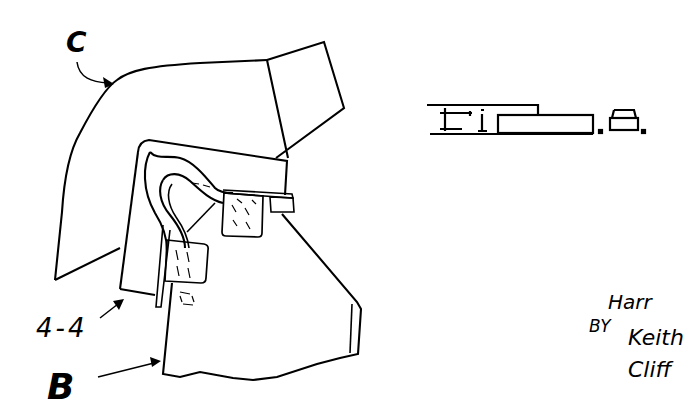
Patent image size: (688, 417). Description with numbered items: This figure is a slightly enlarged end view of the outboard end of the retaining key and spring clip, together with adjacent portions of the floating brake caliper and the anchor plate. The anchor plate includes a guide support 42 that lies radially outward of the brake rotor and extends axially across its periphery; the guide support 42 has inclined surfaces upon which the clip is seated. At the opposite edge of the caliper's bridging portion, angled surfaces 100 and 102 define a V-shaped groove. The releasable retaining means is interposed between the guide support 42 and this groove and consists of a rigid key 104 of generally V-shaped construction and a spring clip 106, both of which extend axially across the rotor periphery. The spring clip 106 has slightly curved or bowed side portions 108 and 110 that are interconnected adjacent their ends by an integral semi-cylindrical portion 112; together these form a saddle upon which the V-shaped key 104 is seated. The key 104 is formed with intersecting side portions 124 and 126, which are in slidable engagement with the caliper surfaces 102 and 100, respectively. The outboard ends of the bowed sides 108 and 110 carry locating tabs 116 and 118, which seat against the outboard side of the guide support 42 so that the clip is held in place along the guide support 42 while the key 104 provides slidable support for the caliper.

The guide support 42 is at (318, 285).
The angled surface 100 is at (207, 148).
The angled surface 102 is at (134, 198).
The rigid key 104 is at (298, 160).
The spring clip 106 is at (309, 196).
The side portion 108 is at (162, 303).
The side portion 110 is at (294, 207).
The semi-cylindrical portion 112 is at (157, 169).
The locating tab 116 is at (207, 272).
The locating tab 118 is at (253, 237).
The side portion 124 is at (132, 272).
The side portion 126 is at (273, 177).